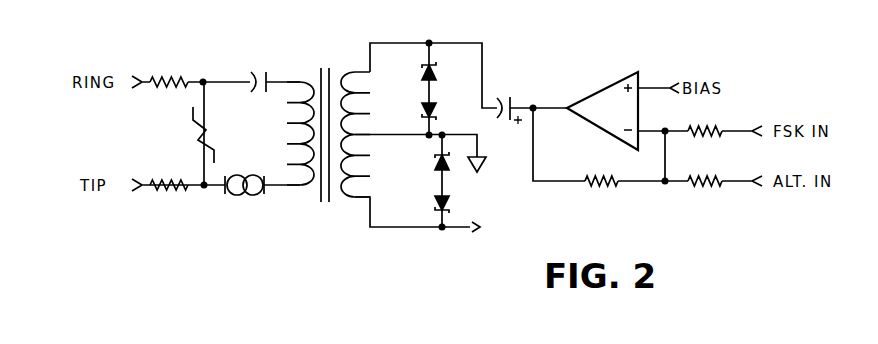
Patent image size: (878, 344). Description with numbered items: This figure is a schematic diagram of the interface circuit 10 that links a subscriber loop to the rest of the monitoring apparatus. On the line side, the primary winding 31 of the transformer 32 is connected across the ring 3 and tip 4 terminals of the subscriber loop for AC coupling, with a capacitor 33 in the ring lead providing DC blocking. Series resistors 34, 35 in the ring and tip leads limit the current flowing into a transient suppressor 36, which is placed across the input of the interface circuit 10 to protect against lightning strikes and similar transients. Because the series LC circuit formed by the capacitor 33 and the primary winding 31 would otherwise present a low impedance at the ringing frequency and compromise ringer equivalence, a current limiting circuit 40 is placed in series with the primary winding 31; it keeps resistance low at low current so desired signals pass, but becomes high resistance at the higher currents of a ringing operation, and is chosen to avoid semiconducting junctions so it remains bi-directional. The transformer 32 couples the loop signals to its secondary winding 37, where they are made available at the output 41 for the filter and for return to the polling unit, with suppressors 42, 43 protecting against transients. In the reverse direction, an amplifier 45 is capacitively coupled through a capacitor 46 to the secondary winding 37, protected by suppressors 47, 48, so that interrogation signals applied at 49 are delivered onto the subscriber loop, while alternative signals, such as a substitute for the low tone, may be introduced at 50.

The ring terminal 3 is at (142, 78).
The tip terminal 4 is at (142, 182).
The interface circuit 10 is at (314, 45).
The primary winding 31 is at (289, 131).
The transformer 32 is at (319, 70).
The capacitor 33 is at (268, 71).
The series resistor 34 is at (165, 77).
The series resistor 35 is at (165, 192).
The transient suppressor 36 is at (210, 128).
The secondary winding 37 is at (353, 70).
The current limiting circuit 40 is at (240, 196).
The output 41 is at (479, 226).
The suppressor 42 is at (435, 157).
The suppressor 43 is at (435, 198).
The amplifier 45 is at (605, 88).
The capacitor 46 is at (512, 97).
The suppressor 47 is at (422, 73).
The suppressor 48 is at (422, 104).
The polling signal input 49 is at (750, 129).
The alternative signal input 50 is at (750, 185).